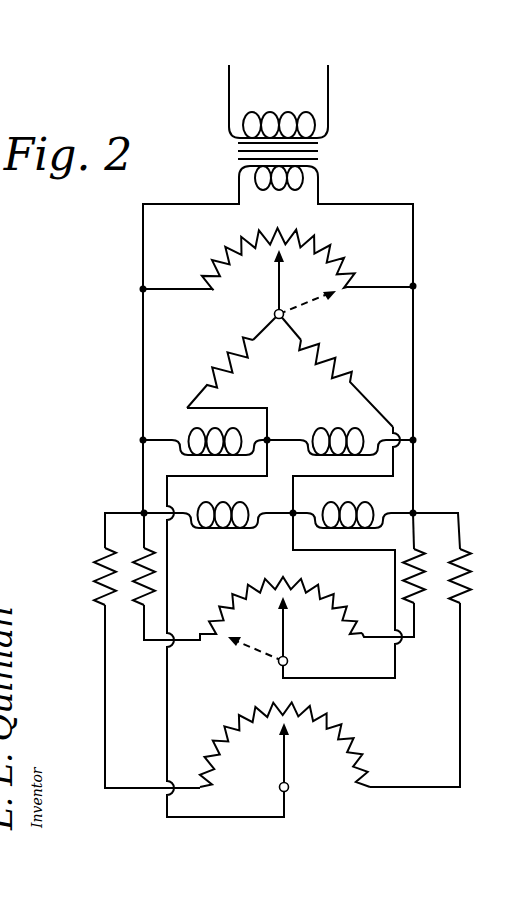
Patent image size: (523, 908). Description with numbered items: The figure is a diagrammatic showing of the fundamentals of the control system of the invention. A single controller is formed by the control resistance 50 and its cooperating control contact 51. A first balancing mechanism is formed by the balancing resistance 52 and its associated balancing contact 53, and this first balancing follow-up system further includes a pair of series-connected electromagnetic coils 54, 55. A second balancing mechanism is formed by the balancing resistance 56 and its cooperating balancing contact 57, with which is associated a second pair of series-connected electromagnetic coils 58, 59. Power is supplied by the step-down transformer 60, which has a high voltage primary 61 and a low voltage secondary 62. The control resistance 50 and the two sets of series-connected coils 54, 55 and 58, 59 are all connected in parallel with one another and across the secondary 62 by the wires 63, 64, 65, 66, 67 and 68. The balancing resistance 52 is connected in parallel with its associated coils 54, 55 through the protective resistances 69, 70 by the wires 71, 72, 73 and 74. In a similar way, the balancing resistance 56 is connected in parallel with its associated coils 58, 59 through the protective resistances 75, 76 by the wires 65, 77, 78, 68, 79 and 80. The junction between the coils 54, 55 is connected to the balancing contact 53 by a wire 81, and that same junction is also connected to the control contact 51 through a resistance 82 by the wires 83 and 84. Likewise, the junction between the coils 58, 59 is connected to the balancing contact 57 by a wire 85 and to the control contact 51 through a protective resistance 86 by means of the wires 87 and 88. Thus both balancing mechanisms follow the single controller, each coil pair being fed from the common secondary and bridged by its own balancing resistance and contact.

The control resistance 50 is at (230, 250).
The control contact 51 is at (278, 282).
The balancing resistance 52 is at (256, 582).
The balancing contact 53 is at (290, 632).
The electromagnetic coil 54 is at (243, 505).
The electromagnetic coil 55 is at (361, 505).
The balancing resistance 56 is at (236, 716).
The balancing contact 57 is at (292, 753).
The electromagnetic coil 58 is at (207, 430).
The electromagnetic coil 59 is at (338, 430).
The step-down transformer 60 is at (333, 146).
The high voltage primary 61 is at (283, 112).
The low voltage secondary 62 is at (300, 187).
The wire 63 is at (143, 234).
The wire 64 is at (143, 352).
The wire 65 is at (143, 478).
The wire 66 is at (414, 246).
The wire 67 is at (414, 356).
The wire 68 is at (414, 478).
The protective resistance 69 is at (140, 598).
The protective resistance 70 is at (421, 603).
The wire 71 is at (143, 535).
The wire 72 is at (186, 641).
The wire 73 is at (415, 541).
The wire 74 is at (415, 641).
The protective resistance 75 is at (100, 582).
The protective resistance 76 is at (466, 576).
The wire 77 is at (104, 513).
The wire 78 is at (105, 680).
The wire 79 is at (459, 533).
The wire 80 is at (461, 750).
The wire 81 is at (350, 677).
The resistance 82 is at (342, 358).
The wire 83 is at (345, 476).
The wire 84 is at (299, 330).
The wire 85 is at (167, 682).
The protective resistance 86 is at (233, 348).
The wire 87 is at (257, 407).
The wire 88 is at (268, 326).